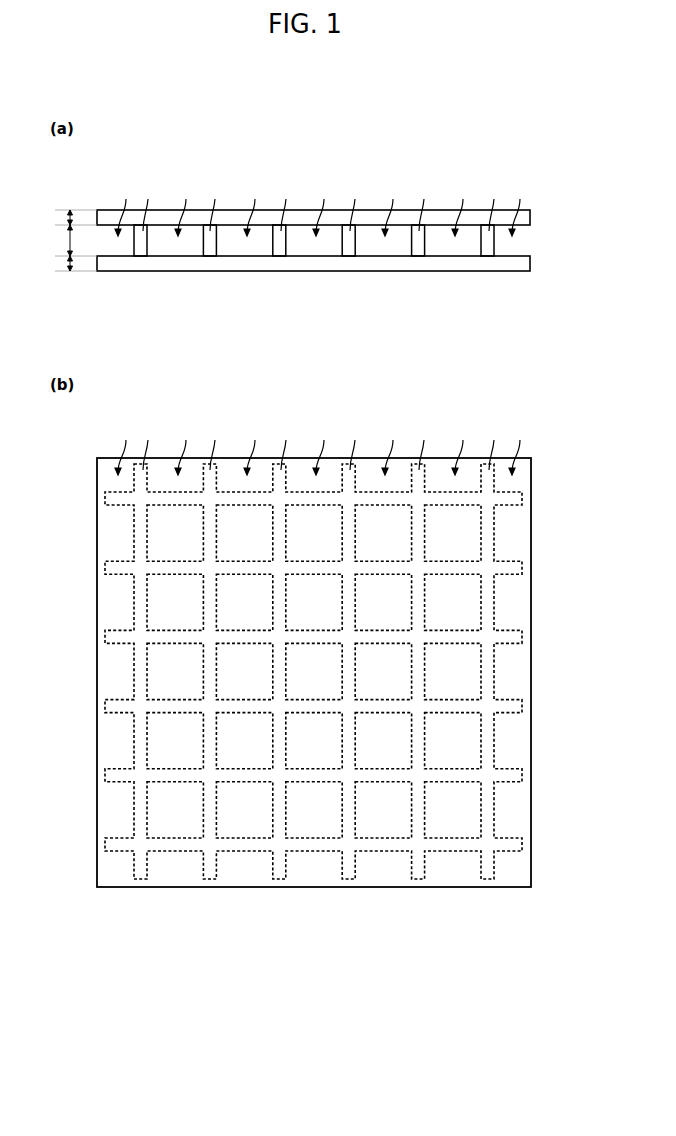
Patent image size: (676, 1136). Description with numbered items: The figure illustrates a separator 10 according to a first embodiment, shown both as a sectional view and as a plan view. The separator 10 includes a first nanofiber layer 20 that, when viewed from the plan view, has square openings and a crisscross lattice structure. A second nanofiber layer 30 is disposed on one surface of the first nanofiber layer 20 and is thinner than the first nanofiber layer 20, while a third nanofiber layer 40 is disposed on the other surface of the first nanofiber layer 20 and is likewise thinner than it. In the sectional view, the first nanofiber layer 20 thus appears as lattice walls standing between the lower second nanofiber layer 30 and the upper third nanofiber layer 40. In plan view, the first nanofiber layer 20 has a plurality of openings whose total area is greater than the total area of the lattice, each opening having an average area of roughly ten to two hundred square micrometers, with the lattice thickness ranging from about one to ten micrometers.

The separator 10 is at (548, 160).
The first nanofiber layer 20 is at (490, 247).
The second nanofiber layer 30 is at (533, 266).
The third nanofiber layer 40 is at (531, 214).